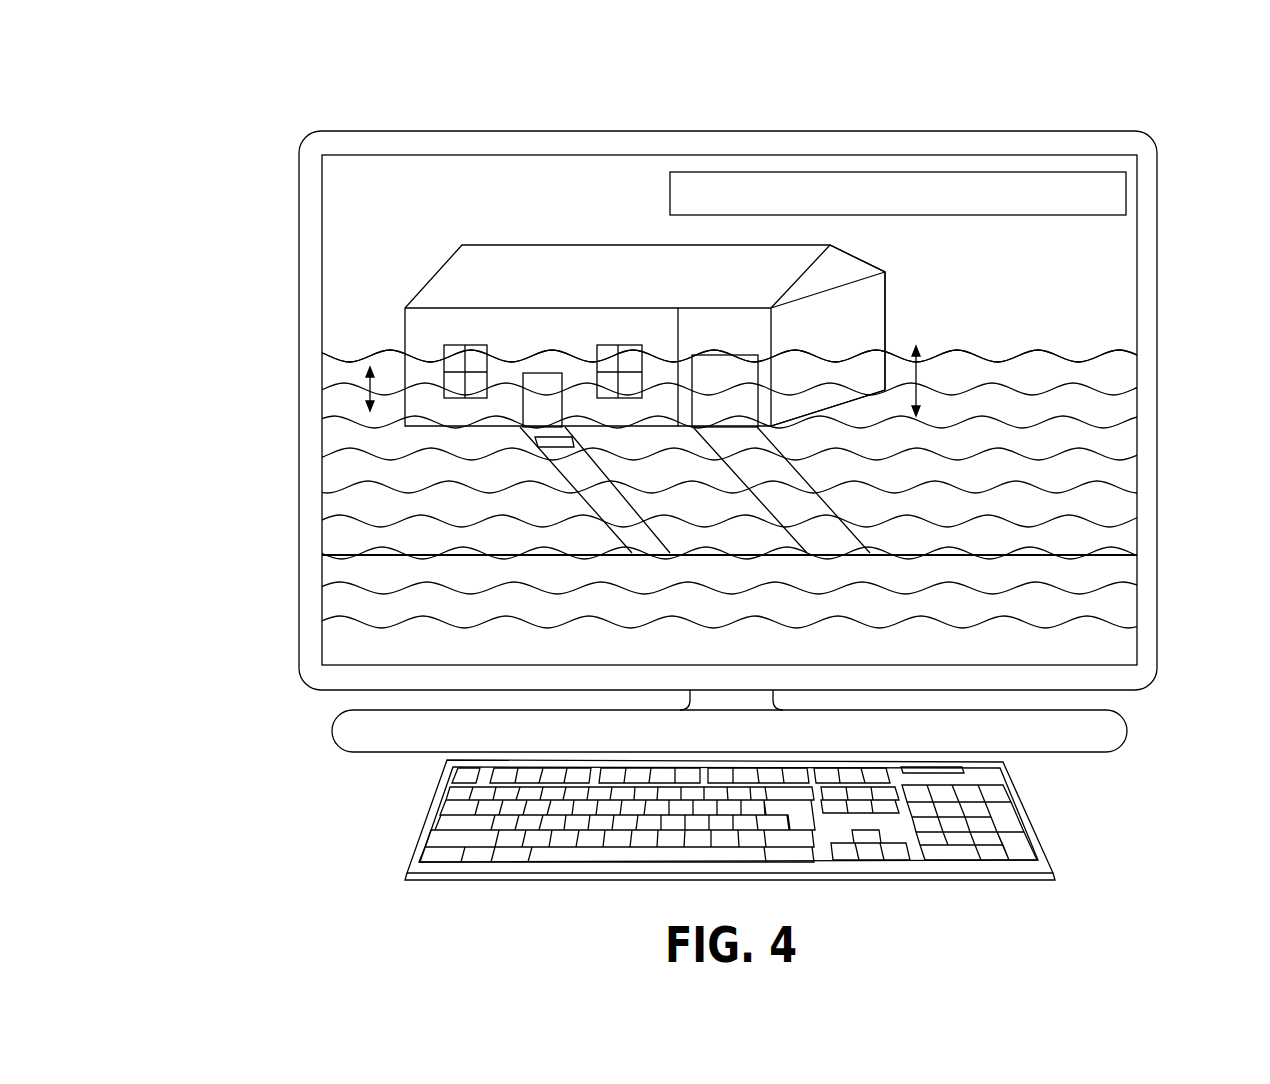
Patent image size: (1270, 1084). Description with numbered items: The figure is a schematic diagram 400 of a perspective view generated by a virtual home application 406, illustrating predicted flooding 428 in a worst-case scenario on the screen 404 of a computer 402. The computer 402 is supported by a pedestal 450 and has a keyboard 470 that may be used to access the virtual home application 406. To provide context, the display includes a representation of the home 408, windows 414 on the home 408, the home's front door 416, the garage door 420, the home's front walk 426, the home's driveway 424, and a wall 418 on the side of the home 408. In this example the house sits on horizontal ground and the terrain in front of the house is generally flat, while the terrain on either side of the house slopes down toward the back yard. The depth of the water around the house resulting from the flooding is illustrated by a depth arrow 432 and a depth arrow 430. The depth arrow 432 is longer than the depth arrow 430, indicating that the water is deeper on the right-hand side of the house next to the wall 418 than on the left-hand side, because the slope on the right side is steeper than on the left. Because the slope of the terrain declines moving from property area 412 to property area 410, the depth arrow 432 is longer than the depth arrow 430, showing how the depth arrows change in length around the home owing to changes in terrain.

The schematic diagram 400 is at (232, 101).
The computer 402 is at (388, 131).
The screen 404 is at (437, 172).
The virtual home application 406 is at (777, 168).
The home 408 is at (480, 245).
The property area 410 is at (955, 358).
The property area 412 is at (345, 358).
The windows 414 is at (455, 344).
The front door 416 is at (540, 373).
The wall 418 is at (865, 298).
The garage door 420 is at (763, 425).
The driveway 424 is at (815, 492).
The front walk 426 is at (605, 500).
The predicted flooding 428 is at (1105, 375).
The depth arrow 430 is at (370, 387).
The depth arrow 432 is at (920, 365).
The pedestal 450 is at (1130, 735).
The keyboard 470 is at (1030, 822).